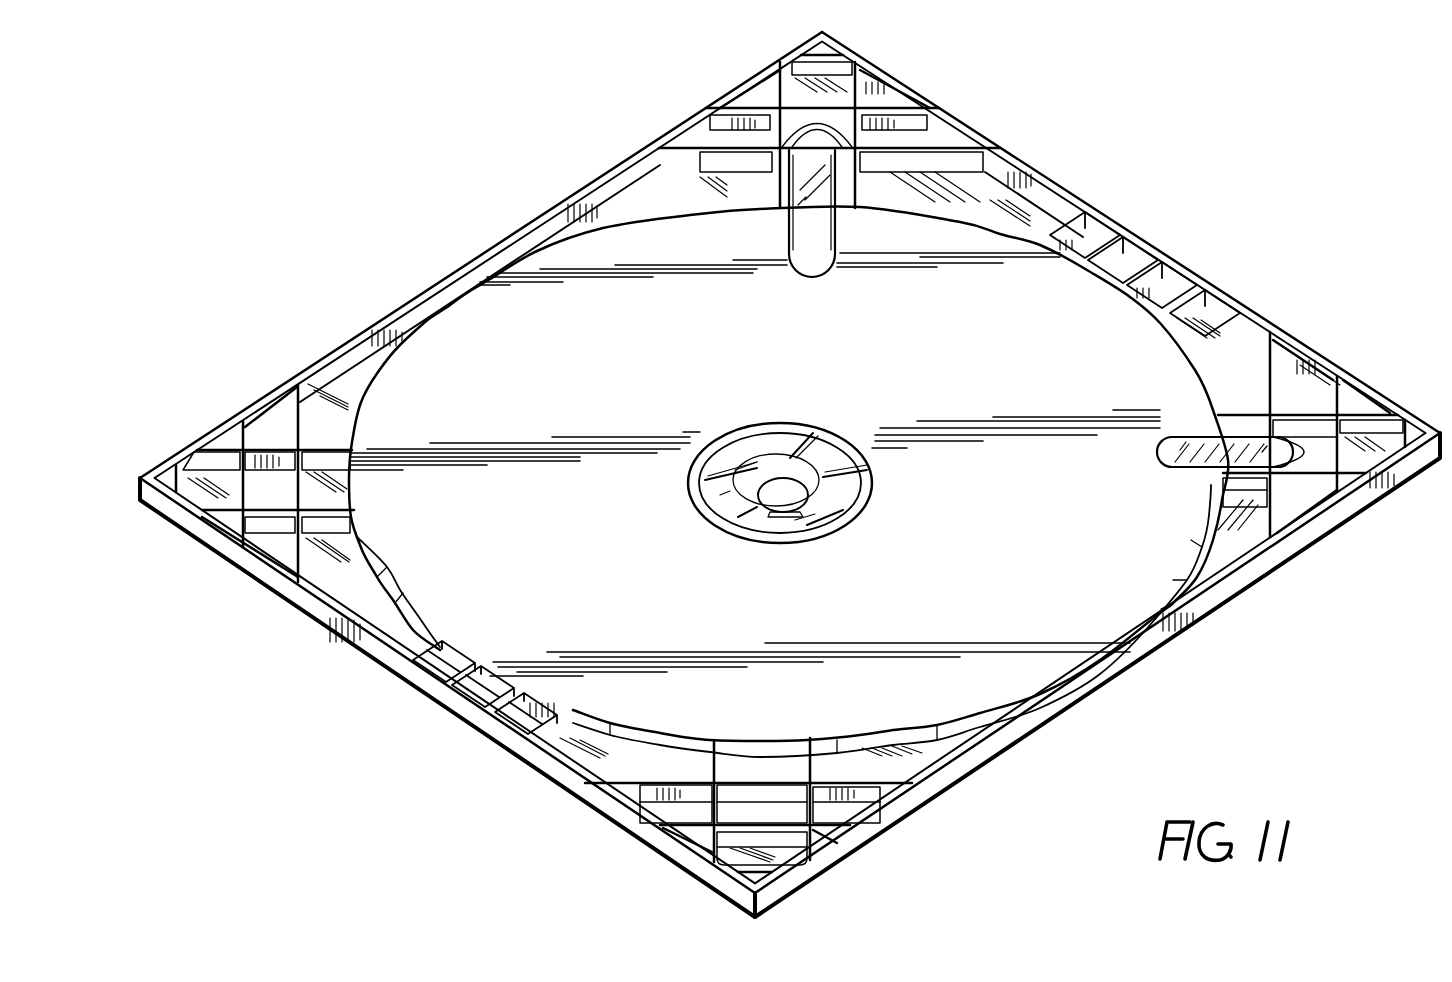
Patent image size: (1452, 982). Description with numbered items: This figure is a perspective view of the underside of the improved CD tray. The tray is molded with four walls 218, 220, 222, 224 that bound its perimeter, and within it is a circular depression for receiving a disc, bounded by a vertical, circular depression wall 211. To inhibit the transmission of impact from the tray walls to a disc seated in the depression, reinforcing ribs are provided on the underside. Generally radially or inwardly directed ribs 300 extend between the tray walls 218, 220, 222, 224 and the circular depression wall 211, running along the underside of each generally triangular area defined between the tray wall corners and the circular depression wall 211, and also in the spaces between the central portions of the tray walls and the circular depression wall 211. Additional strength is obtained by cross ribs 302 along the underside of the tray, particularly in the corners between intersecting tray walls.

The circular depression wall 211 is at (383, 583).
The tray wall 218 is at (470, 264).
The tray wall 220 is at (1145, 243).
The tray wall 222 is at (1118, 676).
The tray wall 224 is at (413, 685).
The ribs 300 is at (335, 525).
The cross ribs 302 is at (292, 418).